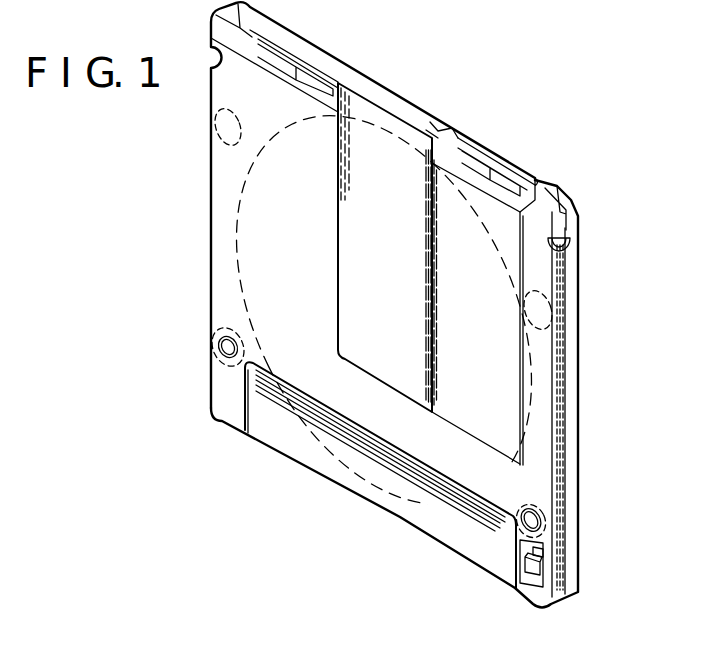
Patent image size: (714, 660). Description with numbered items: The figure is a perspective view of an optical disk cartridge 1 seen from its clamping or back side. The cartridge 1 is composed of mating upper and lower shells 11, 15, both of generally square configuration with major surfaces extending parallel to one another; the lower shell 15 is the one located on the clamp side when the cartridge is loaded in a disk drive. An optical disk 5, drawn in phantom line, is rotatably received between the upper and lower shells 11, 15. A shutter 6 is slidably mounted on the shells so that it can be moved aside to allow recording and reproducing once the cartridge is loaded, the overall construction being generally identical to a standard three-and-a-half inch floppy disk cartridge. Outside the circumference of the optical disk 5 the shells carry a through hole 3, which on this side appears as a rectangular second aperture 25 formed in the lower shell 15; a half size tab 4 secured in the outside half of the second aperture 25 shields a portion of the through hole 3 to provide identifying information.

The cartridge 1 is at (507, 143).
The through hole 3 is at (544, 559).
The half size tab 4 is at (547, 585).
The optical disk 5 is at (418, 504).
The shutter 6 is at (412, 113).
The upper shell 11 is at (580, 373).
The lower shell 15 is at (484, 553).
The second aperture 25 is at (531, 590).